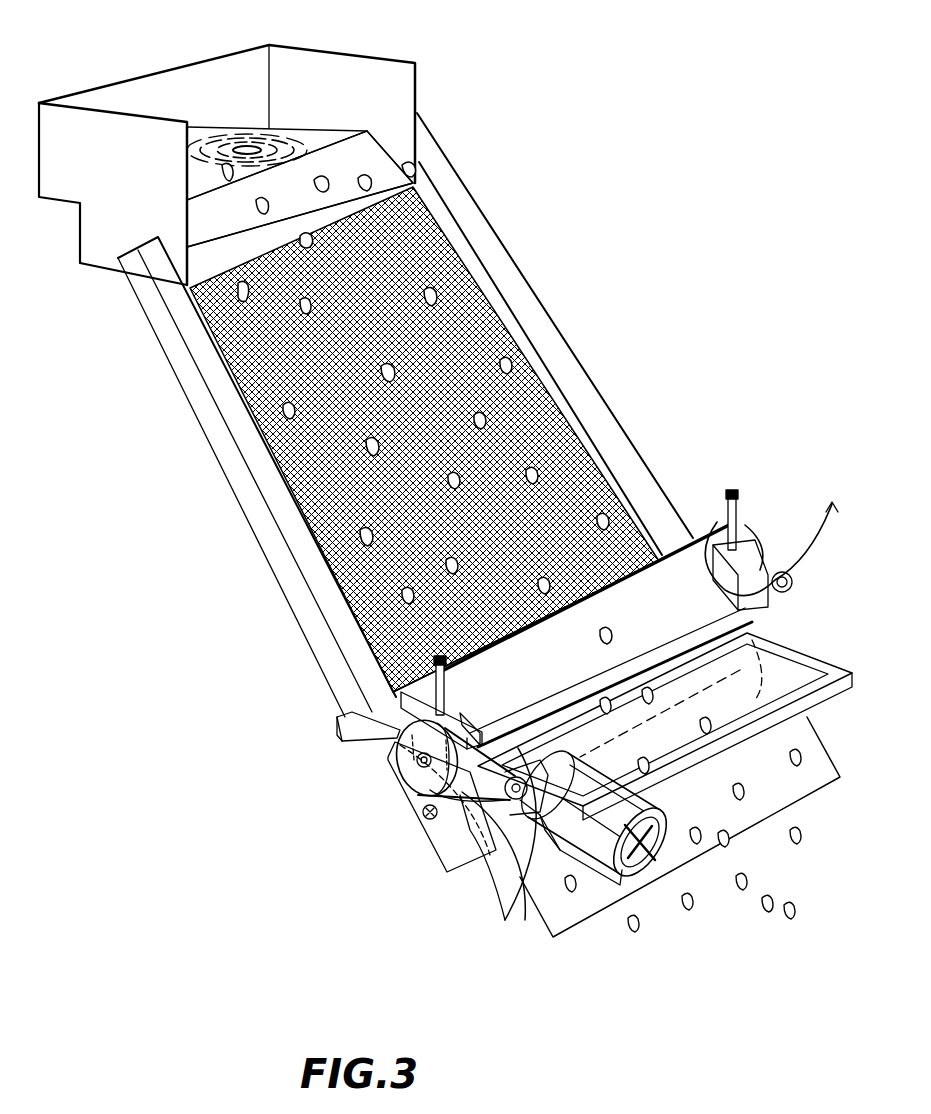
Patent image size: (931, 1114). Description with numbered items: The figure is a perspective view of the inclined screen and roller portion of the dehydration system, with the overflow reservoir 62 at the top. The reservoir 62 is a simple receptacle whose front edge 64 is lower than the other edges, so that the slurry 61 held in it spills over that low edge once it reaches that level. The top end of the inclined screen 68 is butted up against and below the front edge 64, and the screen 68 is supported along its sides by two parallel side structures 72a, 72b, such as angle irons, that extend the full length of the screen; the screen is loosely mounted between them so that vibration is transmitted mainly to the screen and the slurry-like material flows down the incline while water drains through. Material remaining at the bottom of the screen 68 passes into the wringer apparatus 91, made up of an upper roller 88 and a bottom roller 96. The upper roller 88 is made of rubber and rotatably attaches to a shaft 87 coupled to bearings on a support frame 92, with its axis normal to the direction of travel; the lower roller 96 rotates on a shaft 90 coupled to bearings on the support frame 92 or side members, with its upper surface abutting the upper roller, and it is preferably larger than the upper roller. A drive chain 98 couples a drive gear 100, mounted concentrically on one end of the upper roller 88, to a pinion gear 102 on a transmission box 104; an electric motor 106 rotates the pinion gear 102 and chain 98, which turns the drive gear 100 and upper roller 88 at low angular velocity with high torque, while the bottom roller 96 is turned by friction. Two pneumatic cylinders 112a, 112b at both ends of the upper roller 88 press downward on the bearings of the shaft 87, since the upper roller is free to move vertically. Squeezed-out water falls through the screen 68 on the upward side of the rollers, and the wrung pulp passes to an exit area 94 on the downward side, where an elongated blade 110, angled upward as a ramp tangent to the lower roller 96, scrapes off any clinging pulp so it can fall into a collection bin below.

The slurry 61 is at (249, 148).
The overflow reservoir 62 is at (172, 62).
The front edge 64 is at (373, 138).
The inclined screen 68 is at (520, 358).
The side structure 72a is at (212, 360).
The side structure 72b is at (507, 268).
The shaft 87 is at (415, 772).
The upper roller 88 is at (652, 552).
The shaft 90 is at (433, 832).
The wringer apparatus 91 is at (392, 803).
The support frame 92 is at (482, 694).
The exit area 94 is at (778, 787).
The bottom roller 96 is at (430, 822).
The drive chain 98 is at (463, 808).
The drive gear 100 is at (403, 754).
The pinion gear 102 is at (514, 835).
The transmission box 104 is at (515, 870).
The electric motor 106 is at (642, 875).
The elongated blade 110 is at (760, 633).
The pneumatic cylinder 112a is at (435, 692).
The pneumatic cylinder 112b is at (742, 518).